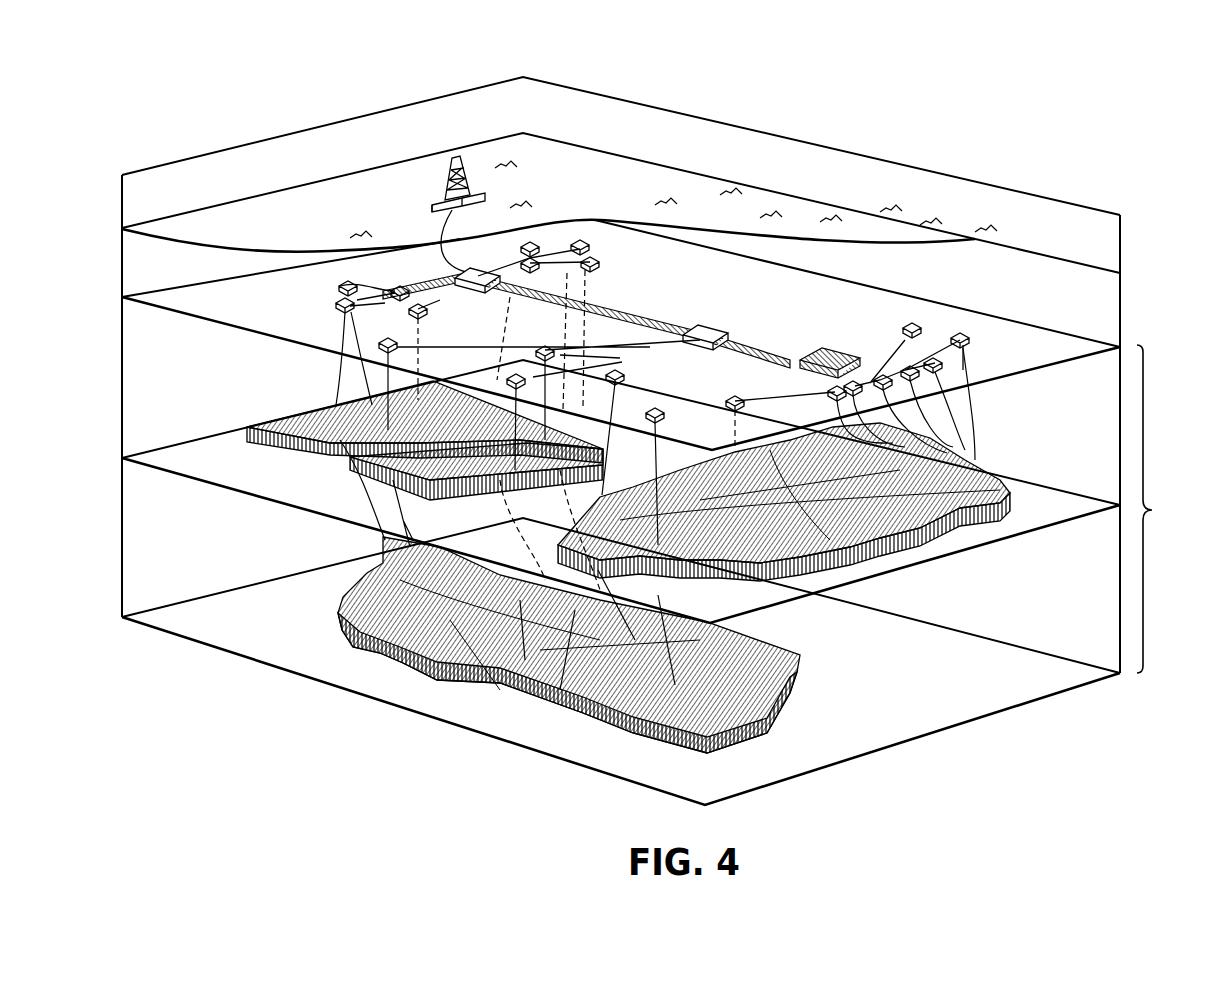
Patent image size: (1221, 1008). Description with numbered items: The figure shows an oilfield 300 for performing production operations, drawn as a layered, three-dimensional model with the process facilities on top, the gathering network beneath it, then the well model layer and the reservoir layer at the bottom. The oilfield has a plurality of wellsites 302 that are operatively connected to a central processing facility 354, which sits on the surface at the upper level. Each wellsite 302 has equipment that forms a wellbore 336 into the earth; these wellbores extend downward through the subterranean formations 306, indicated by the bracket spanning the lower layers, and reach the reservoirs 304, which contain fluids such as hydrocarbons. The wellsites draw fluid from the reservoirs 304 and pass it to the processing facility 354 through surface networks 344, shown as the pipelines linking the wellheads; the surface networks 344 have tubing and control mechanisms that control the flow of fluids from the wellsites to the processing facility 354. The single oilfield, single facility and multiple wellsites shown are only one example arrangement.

The oilfield 300 is at (162, 85).
The wellsite 302 is at (741, 382).
The reservoir 304 is at (868, 574).
The subterranean formation 306 is at (1152, 510).
The wellbore 336 is at (940, 452).
The surface network 344 is at (378, 306).
The central processing facility 354 is at (438, 165).